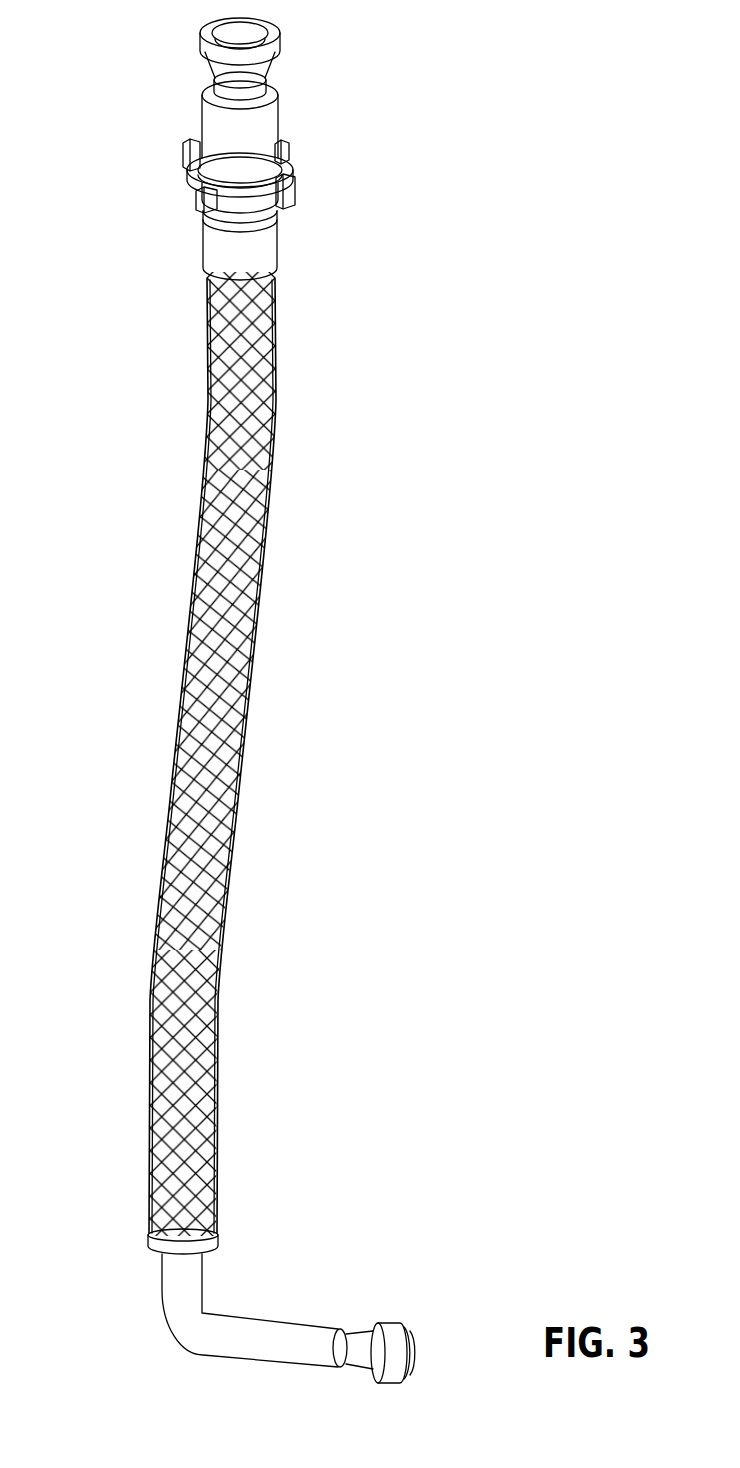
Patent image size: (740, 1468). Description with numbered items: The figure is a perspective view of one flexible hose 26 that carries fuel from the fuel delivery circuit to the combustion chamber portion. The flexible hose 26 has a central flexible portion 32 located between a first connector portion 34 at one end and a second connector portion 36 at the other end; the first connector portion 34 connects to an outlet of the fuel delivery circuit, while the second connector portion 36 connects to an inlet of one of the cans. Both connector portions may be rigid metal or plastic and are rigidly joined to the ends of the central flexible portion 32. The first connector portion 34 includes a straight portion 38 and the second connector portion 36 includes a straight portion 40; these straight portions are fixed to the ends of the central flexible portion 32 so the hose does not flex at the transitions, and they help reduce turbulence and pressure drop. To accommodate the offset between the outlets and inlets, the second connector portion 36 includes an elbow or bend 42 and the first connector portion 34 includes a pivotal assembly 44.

The flexible hose 26 is at (472, 520).
The central flexible portion 32 is at (248, 683).
The first connector portion 34 is at (305, 173).
The second connector portion 36 is at (348, 1319).
The straight portion 38 is at (263, 249).
The straight portion 40 is at (161, 1281).
The elbow or bend 42 is at (204, 1313).
The pivotal assembly 44 is at (182, 200).